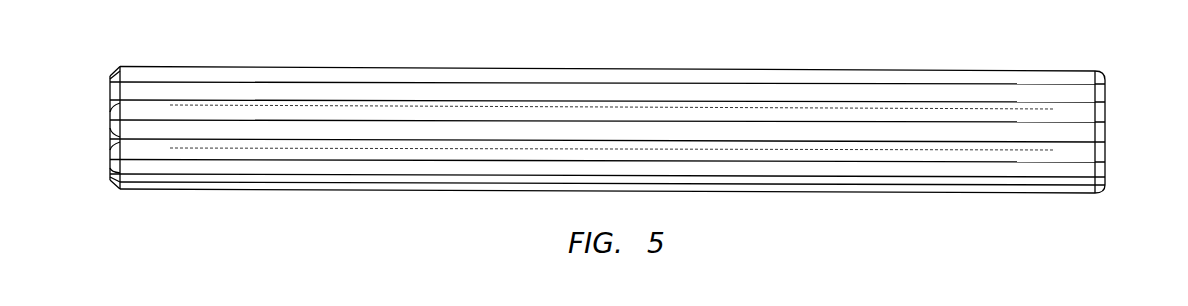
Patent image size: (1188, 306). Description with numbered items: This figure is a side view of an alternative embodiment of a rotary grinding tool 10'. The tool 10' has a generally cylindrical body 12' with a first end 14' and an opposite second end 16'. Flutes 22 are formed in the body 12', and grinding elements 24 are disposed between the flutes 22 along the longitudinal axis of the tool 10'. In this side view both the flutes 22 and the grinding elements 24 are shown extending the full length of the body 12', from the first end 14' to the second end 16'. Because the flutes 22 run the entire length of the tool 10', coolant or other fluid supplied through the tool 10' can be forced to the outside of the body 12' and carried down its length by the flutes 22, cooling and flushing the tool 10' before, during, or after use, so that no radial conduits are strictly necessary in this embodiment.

The rotary grinding tool 10' is at (609, 99).
The generally cylindrical body 12' is at (638, 109).
The first end 14' is at (1128, 118).
The second end 16' is at (88, 128).
The flutes 22 is at (1087, 112).
The grinding elements 24 is at (1087, 97).